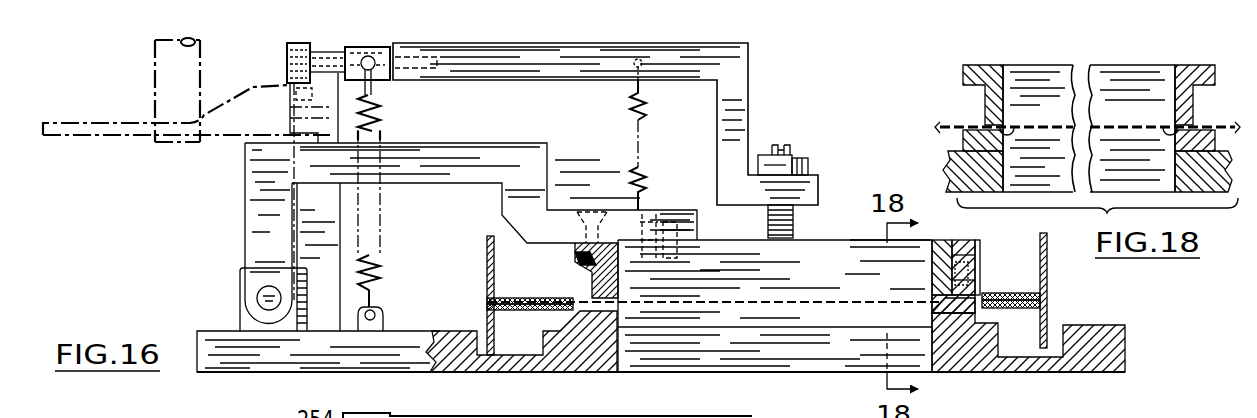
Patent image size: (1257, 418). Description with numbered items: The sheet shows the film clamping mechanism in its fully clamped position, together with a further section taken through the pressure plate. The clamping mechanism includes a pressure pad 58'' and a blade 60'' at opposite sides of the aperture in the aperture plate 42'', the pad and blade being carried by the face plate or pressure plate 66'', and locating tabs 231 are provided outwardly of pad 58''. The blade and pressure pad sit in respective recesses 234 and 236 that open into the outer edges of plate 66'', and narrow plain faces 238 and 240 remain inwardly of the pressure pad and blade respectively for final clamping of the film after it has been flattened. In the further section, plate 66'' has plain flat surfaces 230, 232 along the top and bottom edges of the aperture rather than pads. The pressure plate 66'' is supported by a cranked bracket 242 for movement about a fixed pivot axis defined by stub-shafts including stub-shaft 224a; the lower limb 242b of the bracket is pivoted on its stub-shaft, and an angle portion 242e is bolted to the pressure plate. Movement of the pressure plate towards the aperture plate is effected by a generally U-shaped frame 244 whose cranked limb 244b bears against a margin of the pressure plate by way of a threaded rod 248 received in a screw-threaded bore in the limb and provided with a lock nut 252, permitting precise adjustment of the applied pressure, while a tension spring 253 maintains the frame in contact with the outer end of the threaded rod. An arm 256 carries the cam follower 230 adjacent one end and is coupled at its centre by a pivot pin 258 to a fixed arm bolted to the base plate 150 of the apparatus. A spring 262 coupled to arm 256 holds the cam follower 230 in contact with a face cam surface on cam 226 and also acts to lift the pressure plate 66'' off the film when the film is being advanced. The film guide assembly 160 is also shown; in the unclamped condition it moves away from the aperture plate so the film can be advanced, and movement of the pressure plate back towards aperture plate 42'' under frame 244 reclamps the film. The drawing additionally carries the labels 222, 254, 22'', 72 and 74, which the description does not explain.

In FIG. 16, the base plate 150 is at (283, 373).
In FIG. 18, the base plate 150 is at (948, 165).
In FIG. 16, the film guide assembly 160 is at (1058, 296).
In FIG. 16, the pivot bracket 222 is at (240, 282).
In FIG. 16, the stub-shaft 224a is at (257, 298).
In FIG. 16, the cam 226 is at (126, 118).
In FIG. 16, the cam follower 230 is at (287, 52).
In FIG. 18, the cam follower 230 is at (1012, 130).
In FIG. 16, the locating tabs 231 is at (978, 247).
In FIG. 18, the plain flat surface 232 is at (1158, 125).
In FIG. 16, the recess 234 is at (950, 240).
In FIG. 16, the recess 236 is at (575, 262).
In FIG. 16, the narrow plain face 238 is at (930, 298).
In FIG. 16, the narrow plain face 240 is at (620, 318).
In FIG. 16, the cranked bracket 242 is at (610, 150).
In FIG. 16, the lower limb 242b is at (497, 155).
In FIG. 16, the angle portion 242e is at (677, 210).
In FIG. 16, the U-shaped frame 244 is at (760, 82).
In FIG. 16, the cranked limb 244b is at (690, 64).
In FIG. 16, the threaded rod 248 is at (786, 145).
In FIG. 16, the lock nut 252 is at (800, 158).
In FIG. 16, the tension springs 253 is at (627, 106).
In FIG. 16, the stop (hidden) 254 is at (428, 73).
In FIG. 16, the arm 256 is at (380, 84).
In FIG. 16, the pivot pin 258 is at (290, 110).
In FIG. 16, the spring 262 is at (385, 212).
In FIG. 18, the sheet 22'' is at (1064, 108).
In FIG. 16, the aperture plate 42'' is at (775, 344).
In FIG. 18, the aperture plate 42'' is at (1051, 139).
In FIG. 16, the pressure pad 58'' is at (930, 261).
In FIG. 16, the blade 60'' is at (542, 291).
In FIG. 16, the pressure plate 66'' is at (882, 215).
In FIG. 18, the pressure plate 66'' is at (950, 85).
In FIG. 16, the layer 72 is at (979, 265).
In FIG. 16, the layer 74 is at (980, 287).